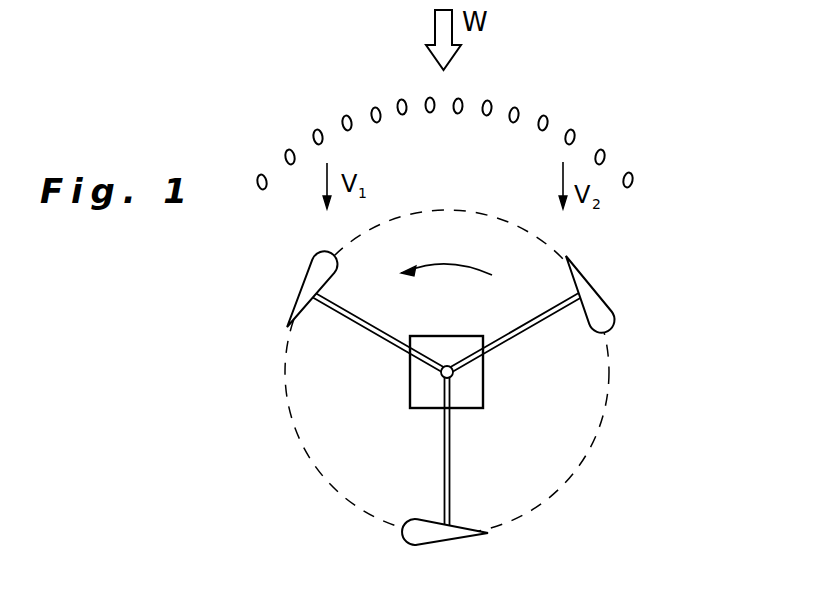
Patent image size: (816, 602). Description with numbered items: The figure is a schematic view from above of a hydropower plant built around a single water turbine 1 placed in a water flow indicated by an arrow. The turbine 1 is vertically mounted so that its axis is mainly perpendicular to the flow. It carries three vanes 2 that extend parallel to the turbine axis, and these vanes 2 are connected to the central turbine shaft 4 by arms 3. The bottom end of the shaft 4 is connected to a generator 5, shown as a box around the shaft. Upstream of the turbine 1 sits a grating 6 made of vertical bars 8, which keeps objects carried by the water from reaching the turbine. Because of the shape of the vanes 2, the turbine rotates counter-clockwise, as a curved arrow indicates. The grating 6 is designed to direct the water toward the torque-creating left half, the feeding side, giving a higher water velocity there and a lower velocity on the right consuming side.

The water turbine 1 is at (630, 454).
The vanes 2 is at (600, 306).
The arms 3 is at (528, 327).
The turbine shaft 4 is at (453, 373).
The generator 5 is at (422, 388).
The grating 6 is at (622, 128).
The vertical bars 8 is at (318, 137).